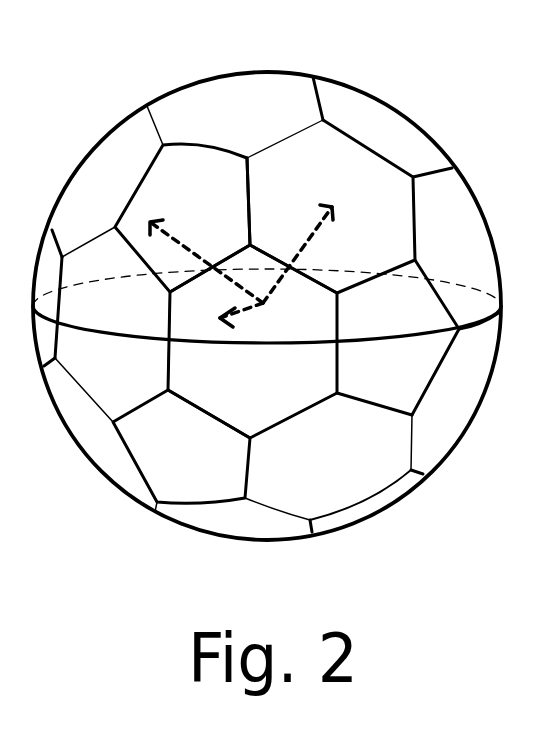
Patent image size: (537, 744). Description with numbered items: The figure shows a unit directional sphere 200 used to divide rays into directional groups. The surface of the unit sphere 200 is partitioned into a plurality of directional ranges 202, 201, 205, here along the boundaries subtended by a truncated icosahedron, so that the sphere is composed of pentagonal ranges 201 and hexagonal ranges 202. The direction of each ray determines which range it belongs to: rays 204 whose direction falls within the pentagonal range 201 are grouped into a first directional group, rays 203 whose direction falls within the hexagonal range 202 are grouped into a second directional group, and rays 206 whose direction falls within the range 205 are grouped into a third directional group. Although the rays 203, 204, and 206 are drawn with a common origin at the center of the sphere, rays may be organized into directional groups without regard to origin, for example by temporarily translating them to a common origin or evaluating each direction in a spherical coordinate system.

The unit sphere 200 is at (275, 70).
The pentagonal range 201 is at (189, 159).
The hexagonal range 202 is at (330, 165).
The rays 203 is at (320, 218).
The rays 204 is at (164, 237).
The directional range 205 is at (302, 302).
The rays 206 is at (238, 312).